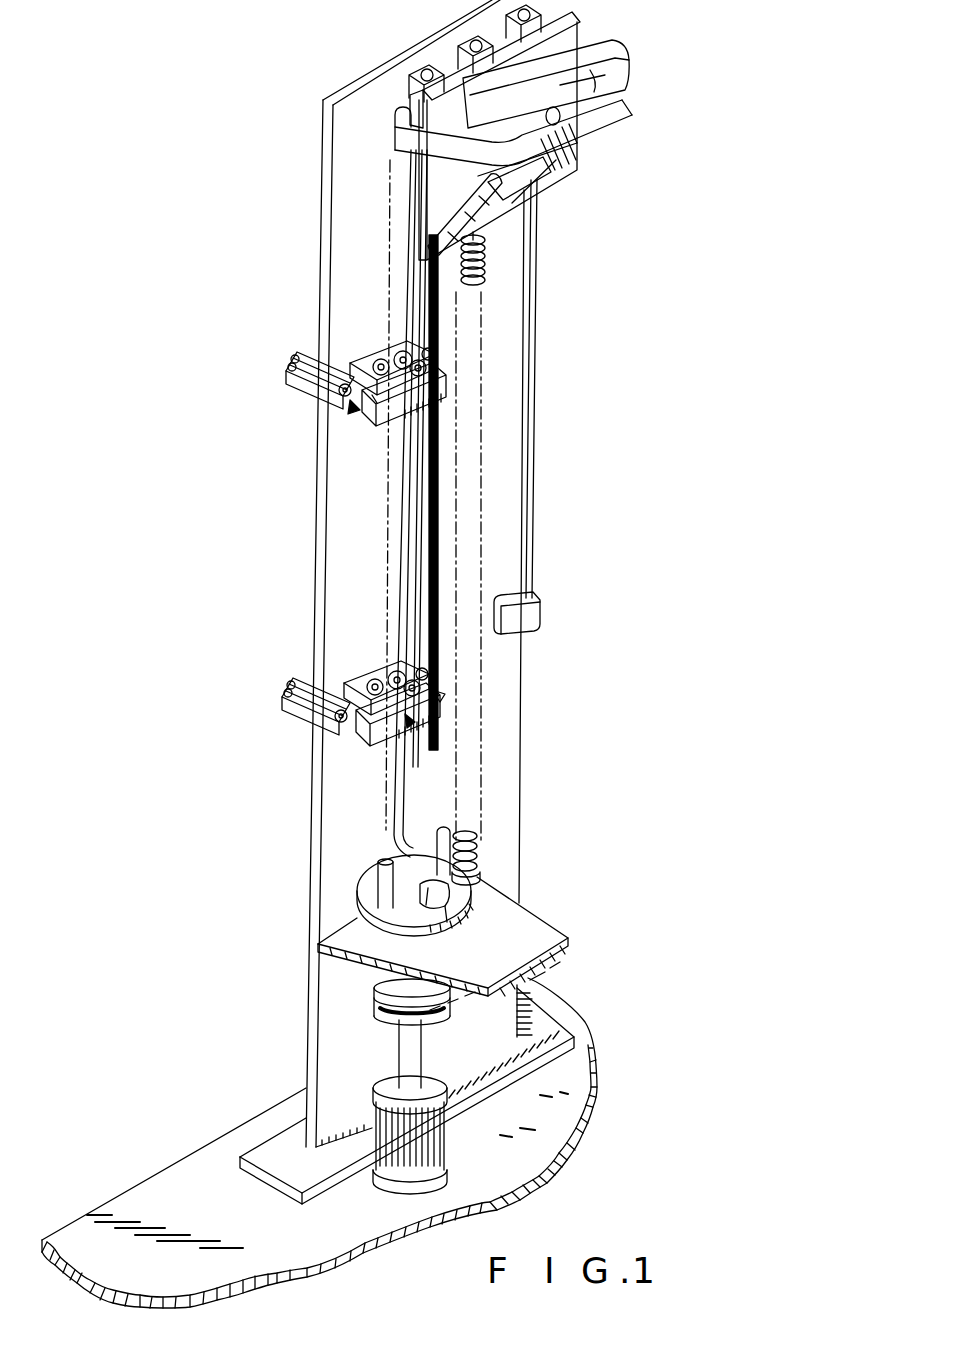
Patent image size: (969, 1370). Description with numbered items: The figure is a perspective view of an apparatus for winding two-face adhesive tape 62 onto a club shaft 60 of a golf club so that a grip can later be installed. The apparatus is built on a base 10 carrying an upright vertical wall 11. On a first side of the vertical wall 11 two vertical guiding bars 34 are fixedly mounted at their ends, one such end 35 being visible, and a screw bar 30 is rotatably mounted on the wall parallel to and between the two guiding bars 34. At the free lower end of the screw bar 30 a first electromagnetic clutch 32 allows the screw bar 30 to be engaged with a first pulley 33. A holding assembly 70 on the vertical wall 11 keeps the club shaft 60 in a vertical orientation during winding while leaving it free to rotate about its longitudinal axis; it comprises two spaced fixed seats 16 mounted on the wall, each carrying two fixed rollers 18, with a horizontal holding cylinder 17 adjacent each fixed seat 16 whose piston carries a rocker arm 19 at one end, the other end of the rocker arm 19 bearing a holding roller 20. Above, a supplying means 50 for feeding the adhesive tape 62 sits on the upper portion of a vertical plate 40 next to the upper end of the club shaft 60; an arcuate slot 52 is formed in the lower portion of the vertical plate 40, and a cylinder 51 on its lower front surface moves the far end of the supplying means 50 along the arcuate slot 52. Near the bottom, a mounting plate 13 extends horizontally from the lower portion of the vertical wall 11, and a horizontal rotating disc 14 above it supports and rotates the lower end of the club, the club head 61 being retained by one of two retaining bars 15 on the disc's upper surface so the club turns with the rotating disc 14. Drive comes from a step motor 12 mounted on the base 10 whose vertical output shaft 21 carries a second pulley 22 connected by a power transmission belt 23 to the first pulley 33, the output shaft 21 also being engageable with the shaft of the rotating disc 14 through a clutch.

The base 10 is at (567, 1094).
The vertical wall 11 is at (508, 740).
The step motor 12 is at (442, 1163).
The mounting plate 13 is at (545, 945).
The rotating disc 14 is at (357, 893).
The retaining bars 15 is at (378, 868).
The fixed seats 16 is at (352, 410).
The holding cylinder 17 is at (299, 352).
The fixed rollers 18 is at (378, 343).
The rocker arm 19 is at (379, 415).
The holding roller 20 is at (442, 699).
The output shaft 21 is at (400, 1050).
The second pulley 22 is at (378, 995).
The power transmission belt 23 is at (446, 1010).
The screw bar 30 is at (470, 808).
The first electromagnetic clutch 32 is at (478, 864).
The first pulley 33 is at (483, 890).
The vertical guiding bars 34 is at (527, 421).
The end 35 is at (540, 613).
The vertical plate 40 is at (578, 166).
The supplying means 50 is at (598, 122).
The cylinder 51 is at (452, 212).
The arcuate slot 52 is at (550, 186).
The club shaft 60 is at (392, 543).
The club head 61 is at (438, 924).
The two-face adhesive tape 62 is at (618, 79).
The holding assembly 70 is at (280, 416).